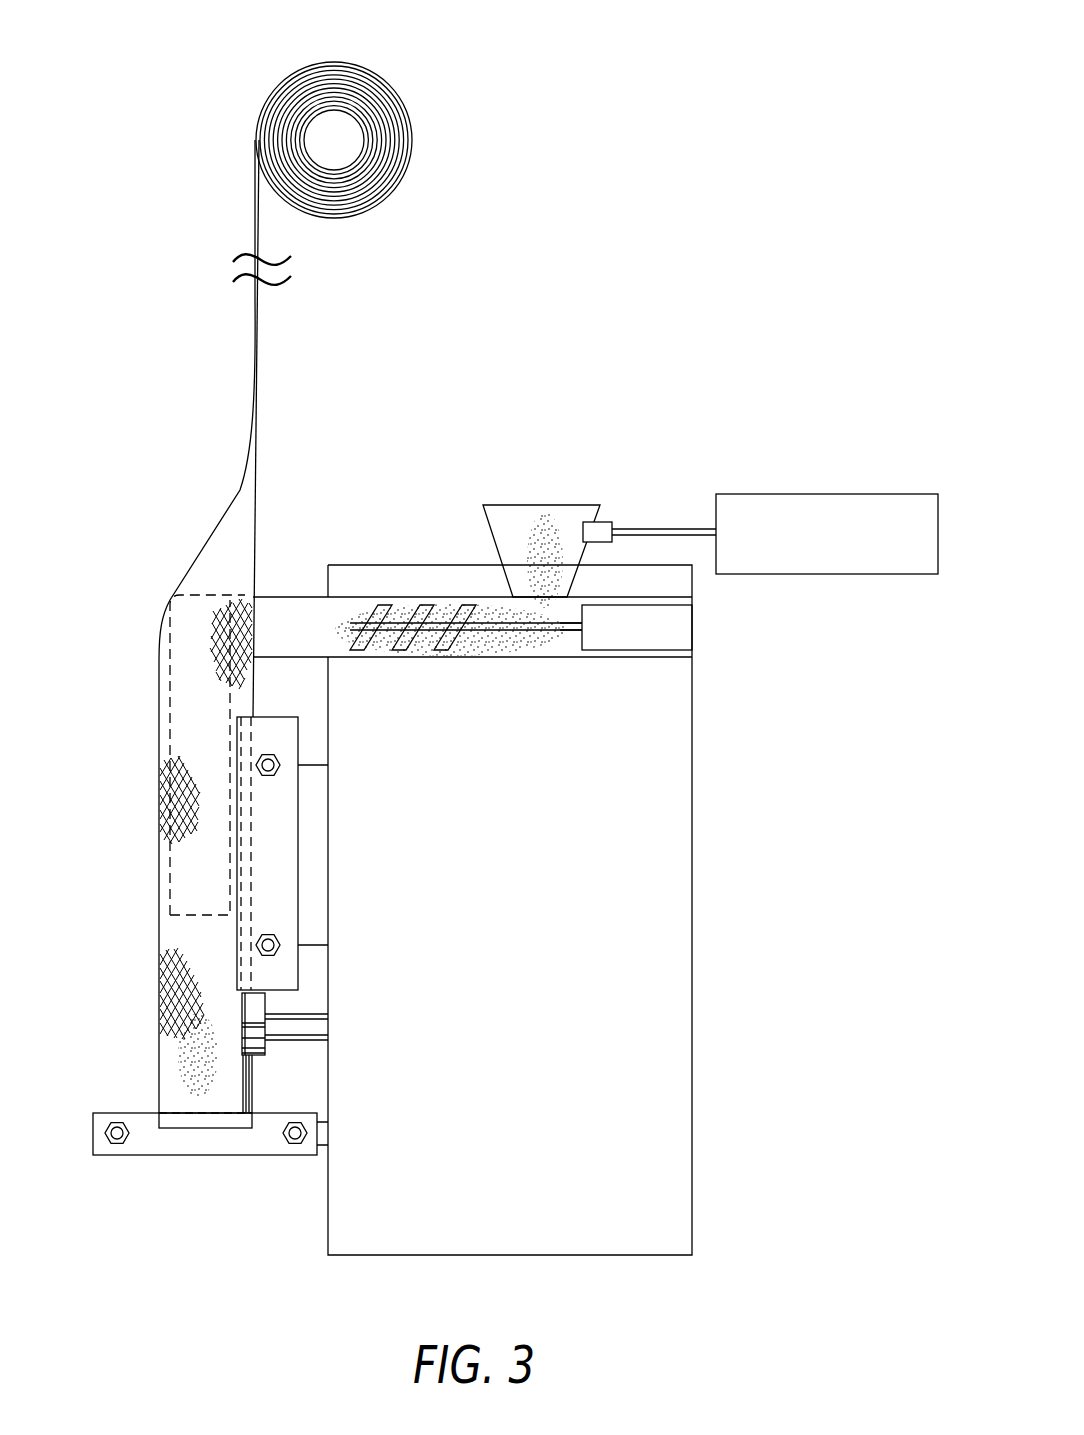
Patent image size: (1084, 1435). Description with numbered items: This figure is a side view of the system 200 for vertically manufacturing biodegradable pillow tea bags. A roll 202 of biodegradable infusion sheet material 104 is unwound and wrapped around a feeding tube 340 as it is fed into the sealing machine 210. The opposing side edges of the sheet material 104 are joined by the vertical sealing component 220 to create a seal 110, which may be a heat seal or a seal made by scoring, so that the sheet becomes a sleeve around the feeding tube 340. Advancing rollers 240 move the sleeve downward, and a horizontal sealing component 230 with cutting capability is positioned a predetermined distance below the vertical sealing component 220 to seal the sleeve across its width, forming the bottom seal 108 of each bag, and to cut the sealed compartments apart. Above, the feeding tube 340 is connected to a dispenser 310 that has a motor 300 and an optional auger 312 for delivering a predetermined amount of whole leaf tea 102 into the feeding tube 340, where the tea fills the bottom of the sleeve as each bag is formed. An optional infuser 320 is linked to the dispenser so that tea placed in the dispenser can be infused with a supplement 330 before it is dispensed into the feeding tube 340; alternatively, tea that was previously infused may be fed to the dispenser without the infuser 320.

The system 200 is at (192, 198).
The roll 202 is at (355, 63).
The biodegradable infusion material 104 is at (253, 483).
The feeding tube 340 is at (184, 730).
The sealing machine 210 is at (712, 938).
The whole leaf tea 102 is at (538, 597).
The auger 312 is at (378, 618).
The supplement 330 is at (570, 524).
The infuser 320 is at (793, 494).
The motor 300 is at (692, 632).
The dispenser 310 is at (657, 651).
The vertical sealing component 220 is at (288, 828).
The advancing rollers 240 is at (258, 1003).
The seal 110 is at (252, 1083).
The bottom seal 108 is at (178, 1120).
The horizontal sealing component 230 is at (233, 1145).